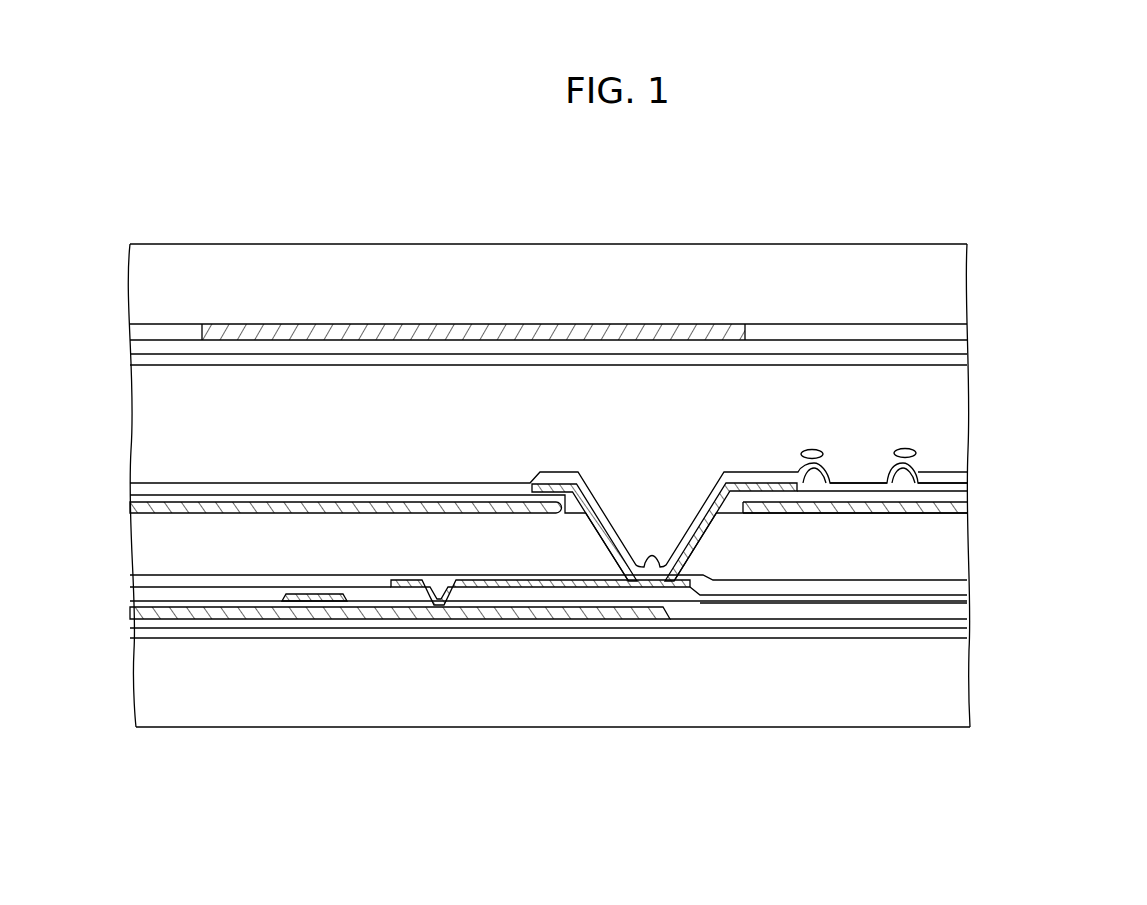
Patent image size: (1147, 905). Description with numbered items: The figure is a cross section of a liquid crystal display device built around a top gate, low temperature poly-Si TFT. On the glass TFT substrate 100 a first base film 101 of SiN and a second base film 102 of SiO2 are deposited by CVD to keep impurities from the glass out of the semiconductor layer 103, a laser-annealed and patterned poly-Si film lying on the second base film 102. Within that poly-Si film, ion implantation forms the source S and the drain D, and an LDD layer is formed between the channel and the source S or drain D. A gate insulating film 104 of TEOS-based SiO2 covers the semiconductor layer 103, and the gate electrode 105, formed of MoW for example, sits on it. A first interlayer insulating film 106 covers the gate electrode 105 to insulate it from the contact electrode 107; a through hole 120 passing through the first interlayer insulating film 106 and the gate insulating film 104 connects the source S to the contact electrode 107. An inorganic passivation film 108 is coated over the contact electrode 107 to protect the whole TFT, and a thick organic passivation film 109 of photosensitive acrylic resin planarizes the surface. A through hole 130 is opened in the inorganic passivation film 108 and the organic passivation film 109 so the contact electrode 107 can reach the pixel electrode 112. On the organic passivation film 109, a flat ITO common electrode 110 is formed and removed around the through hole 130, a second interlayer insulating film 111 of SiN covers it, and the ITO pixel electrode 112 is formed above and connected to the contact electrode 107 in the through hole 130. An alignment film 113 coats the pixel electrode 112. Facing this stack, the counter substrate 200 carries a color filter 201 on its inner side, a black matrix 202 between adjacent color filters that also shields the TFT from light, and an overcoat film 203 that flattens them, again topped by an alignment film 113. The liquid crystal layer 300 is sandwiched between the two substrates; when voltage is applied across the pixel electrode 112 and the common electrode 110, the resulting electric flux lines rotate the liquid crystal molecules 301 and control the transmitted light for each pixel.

The TFT substrate 100 is at (953, 674).
The first base film 101 is at (635, 636).
The second base film 102 is at (700, 622).
The semiconductor layer 103 is at (303, 607).
The gate insulating film 104 is at (767, 612).
The gate electrode 105 is at (322, 601).
The first interlayer insulating film 106 is at (833, 600).
The contact electrode 107 is at (541, 590).
The inorganic passivation film 108 is at (902, 585).
The organic passivation film 109 is at (953, 542).
The common electrode 110 is at (410, 505).
The second interlayer insulating film 111 is at (487, 495).
The pixel electrode 112 is at (561, 488).
The alignment film 113 is at (680, 360).
The through hole 120 is at (437, 583).
The through hole 130 is at (652, 545).
The counter substrate 200 is at (953, 290).
The color filter 201 is at (186, 330).
The black matrix 202 is at (530, 330).
The overcoat film 203 is at (953, 350).
The liquid crystal layer 300 is at (953, 416).
The liquid crystal molecules 301 is at (905, 449).
The drain D is at (193, 620).
The LDD layer LDD is at (273, 612).
The source S is at (432, 612).